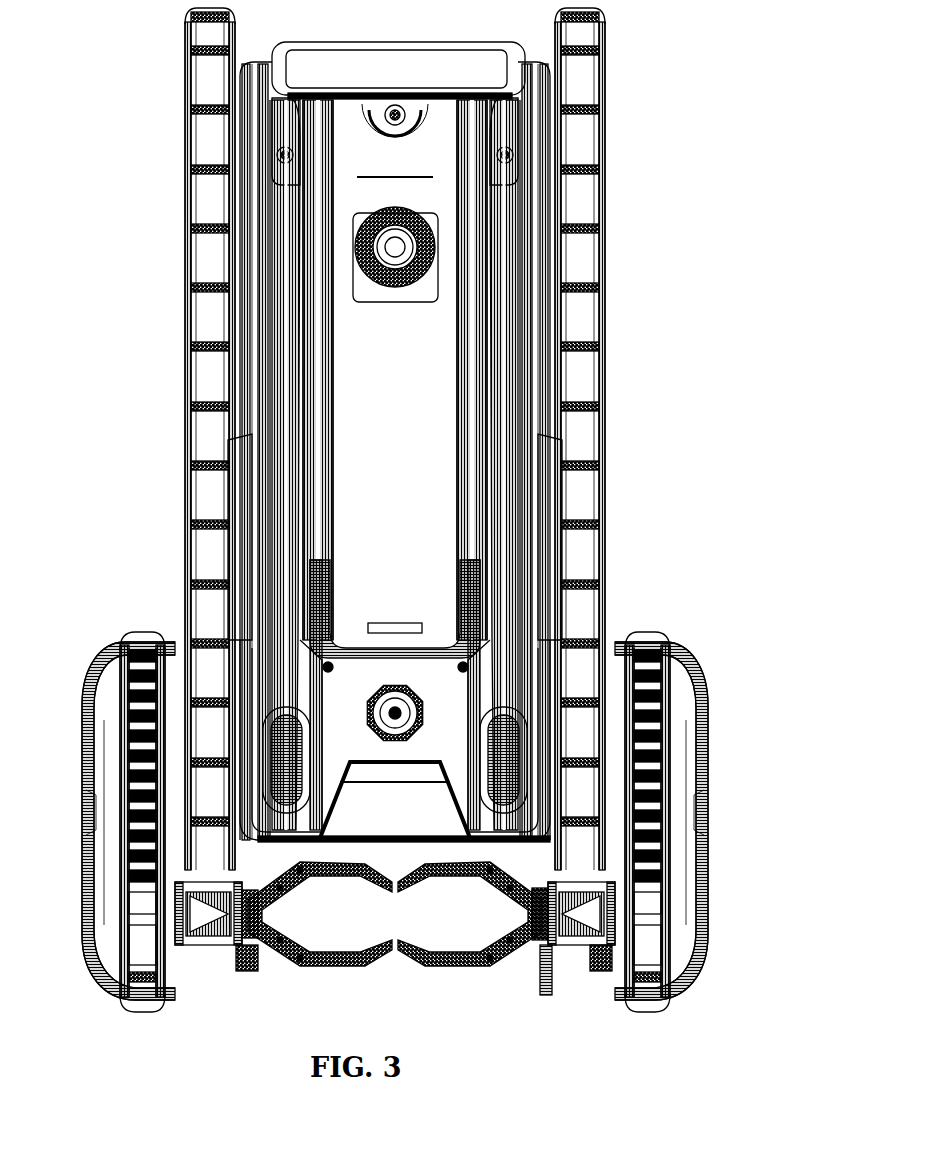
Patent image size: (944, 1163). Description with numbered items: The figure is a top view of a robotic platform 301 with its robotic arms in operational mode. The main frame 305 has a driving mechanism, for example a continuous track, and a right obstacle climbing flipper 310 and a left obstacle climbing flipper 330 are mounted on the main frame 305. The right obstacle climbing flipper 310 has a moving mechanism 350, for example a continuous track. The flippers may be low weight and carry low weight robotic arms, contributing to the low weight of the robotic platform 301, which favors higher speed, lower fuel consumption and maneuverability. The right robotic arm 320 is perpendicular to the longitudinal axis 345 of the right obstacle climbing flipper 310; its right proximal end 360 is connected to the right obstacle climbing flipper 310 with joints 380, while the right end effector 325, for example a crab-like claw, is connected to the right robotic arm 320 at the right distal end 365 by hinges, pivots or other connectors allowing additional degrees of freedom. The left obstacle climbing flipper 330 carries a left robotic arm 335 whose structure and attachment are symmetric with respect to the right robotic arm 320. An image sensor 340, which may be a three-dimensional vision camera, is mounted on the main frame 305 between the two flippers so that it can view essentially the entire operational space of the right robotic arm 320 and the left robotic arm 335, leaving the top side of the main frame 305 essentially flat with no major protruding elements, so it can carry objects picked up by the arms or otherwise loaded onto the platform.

The robotic platform 301 is at (455, 569).
The main frame 305 is at (527, 845).
The right obstacle climbing flipper 310 is at (740, 763).
The right robotic arm 320 is at (603, 963).
The right end effector 325 is at (438, 972).
The left obstacle climbing flipper 330 is at (83, 868).
The left robotic arm 335 is at (246, 976).
The image sensor 340 is at (393, 724).
The longitudinal axis 345 is at (641, 606).
The moving mechanism 350 is at (703, 666).
The right proximal end 360 is at (575, 949).
The right distal end 365 is at (532, 956).
The joints 380 is at (570, 949).